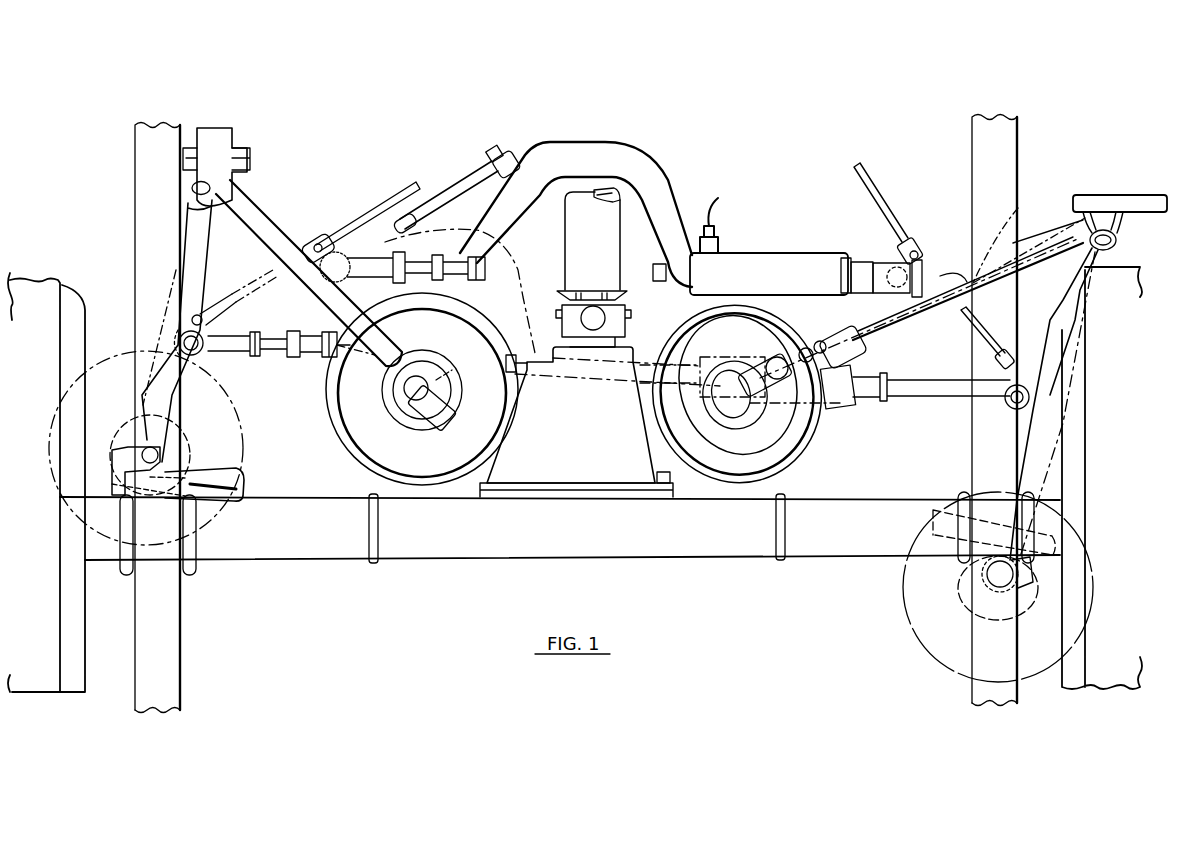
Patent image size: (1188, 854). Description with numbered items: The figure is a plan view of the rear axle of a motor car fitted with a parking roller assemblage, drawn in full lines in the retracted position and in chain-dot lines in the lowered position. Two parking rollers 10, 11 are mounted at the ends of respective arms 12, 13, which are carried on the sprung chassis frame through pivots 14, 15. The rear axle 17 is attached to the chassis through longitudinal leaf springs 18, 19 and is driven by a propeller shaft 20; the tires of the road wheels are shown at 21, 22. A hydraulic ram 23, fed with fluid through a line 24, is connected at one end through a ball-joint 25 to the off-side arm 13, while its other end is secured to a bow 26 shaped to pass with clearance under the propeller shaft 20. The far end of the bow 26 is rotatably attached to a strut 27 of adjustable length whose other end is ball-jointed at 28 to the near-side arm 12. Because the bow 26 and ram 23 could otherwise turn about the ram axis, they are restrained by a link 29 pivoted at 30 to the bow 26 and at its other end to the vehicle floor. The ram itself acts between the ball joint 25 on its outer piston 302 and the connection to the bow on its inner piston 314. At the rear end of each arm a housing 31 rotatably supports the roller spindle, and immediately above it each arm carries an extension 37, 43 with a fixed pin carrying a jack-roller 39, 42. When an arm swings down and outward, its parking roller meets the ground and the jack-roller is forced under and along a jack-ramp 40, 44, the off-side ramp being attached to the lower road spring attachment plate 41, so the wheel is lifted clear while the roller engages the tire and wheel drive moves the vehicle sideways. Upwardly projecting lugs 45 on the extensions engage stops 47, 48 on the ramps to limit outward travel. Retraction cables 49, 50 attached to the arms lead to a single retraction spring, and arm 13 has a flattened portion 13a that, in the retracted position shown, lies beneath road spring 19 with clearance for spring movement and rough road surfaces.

The parking roller 10 is at (243, 440).
The parking roller 11 is at (810, 453).
The arm 12 is at (186, 298).
The arm 13 is at (890, 317).
The flattened portion 13a is at (1018, 213).
The pivot 14 is at (197, 181).
The pivot 15 is at (1117, 233).
The rear axle 17 is at (596, 540).
The leaf spring 18 is at (172, 693).
The leaf spring 19 is at (972, 686).
The propeller shaft 20 is at (573, 224).
The tire 21 is at (46, 324).
The tire 22 is at (1124, 322).
The hydraulic ram 23 is at (780, 263).
The line 24 is at (712, 218).
The ball-joint 25 is at (881, 265).
The bow 26 is at (663, 200).
The strut 27 is at (265, 348).
The ball-joint 28 is at (194, 354).
The link 29 is at (458, 195).
The pivot 30 is at (514, 158).
The housing 31 is at (447, 380).
The extension 37 is at (393, 378).
The jack-roller 39 is at (415, 412).
The jack-ramp 40 is at (217, 475).
The lower road spring attachment plate 41 is at (80, 503).
The jack-roller 42 is at (856, 347).
The extension 43 is at (795, 351).
The jack-ramp 44 is at (940, 537).
The lug 45 is at (404, 396).
The stop 47 is at (118, 452).
The stop 48 is at (1019, 594).
The retraction cable 49 is at (378, 222).
The retraction cable 50 is at (889, 212).
The outer piston 302 is at (852, 260).
The inner piston 314 is at (605, 370).